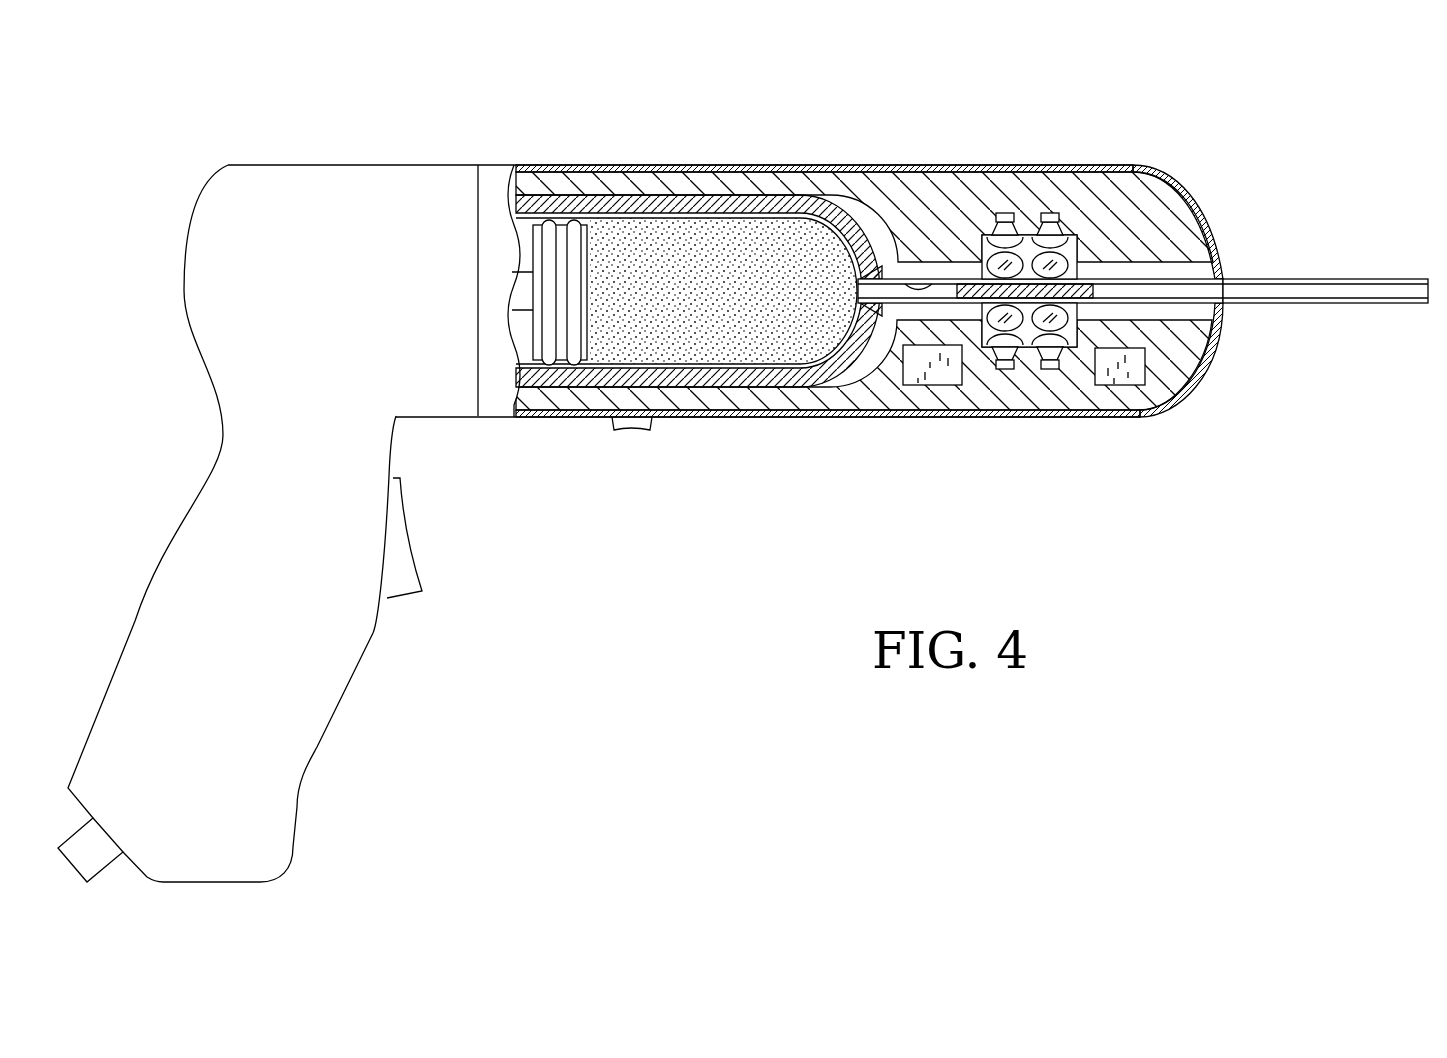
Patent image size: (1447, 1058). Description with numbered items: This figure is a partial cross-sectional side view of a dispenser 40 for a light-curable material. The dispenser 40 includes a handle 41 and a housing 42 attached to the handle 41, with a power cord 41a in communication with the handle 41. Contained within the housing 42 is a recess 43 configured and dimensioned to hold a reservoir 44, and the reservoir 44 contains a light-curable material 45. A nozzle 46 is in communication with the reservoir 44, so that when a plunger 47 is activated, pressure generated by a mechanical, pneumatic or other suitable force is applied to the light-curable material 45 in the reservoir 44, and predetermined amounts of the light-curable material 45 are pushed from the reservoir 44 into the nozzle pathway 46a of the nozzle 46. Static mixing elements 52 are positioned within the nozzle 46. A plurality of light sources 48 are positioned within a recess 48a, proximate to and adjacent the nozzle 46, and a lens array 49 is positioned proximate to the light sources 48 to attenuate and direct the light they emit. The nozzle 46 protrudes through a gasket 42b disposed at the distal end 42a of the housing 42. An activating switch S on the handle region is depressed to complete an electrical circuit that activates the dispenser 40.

The dispenser 40 is at (536, 143).
The handle 41 is at (178, 597).
The power cord 41a is at (98, 857).
The housing 42 is at (765, 165).
The distal end 42a is at (1200, 215).
The gasket 42b is at (1227, 272).
The recess 43 is at (860, 218).
The reservoir 44 is at (660, 200).
The light-curable material 45 is at (735, 342).
The nozzle 46 is at (930, 283).
The nozzle pathway 46a is at (892, 276).
The plunger 47 is at (548, 262).
The light sources 48 is at (1003, 212).
The recess 48a is at (1120, 388).
The lens array 49 is at (1080, 262).
The static mixing elements 52 is at (1112, 348).
The activating switch S is at (400, 573).